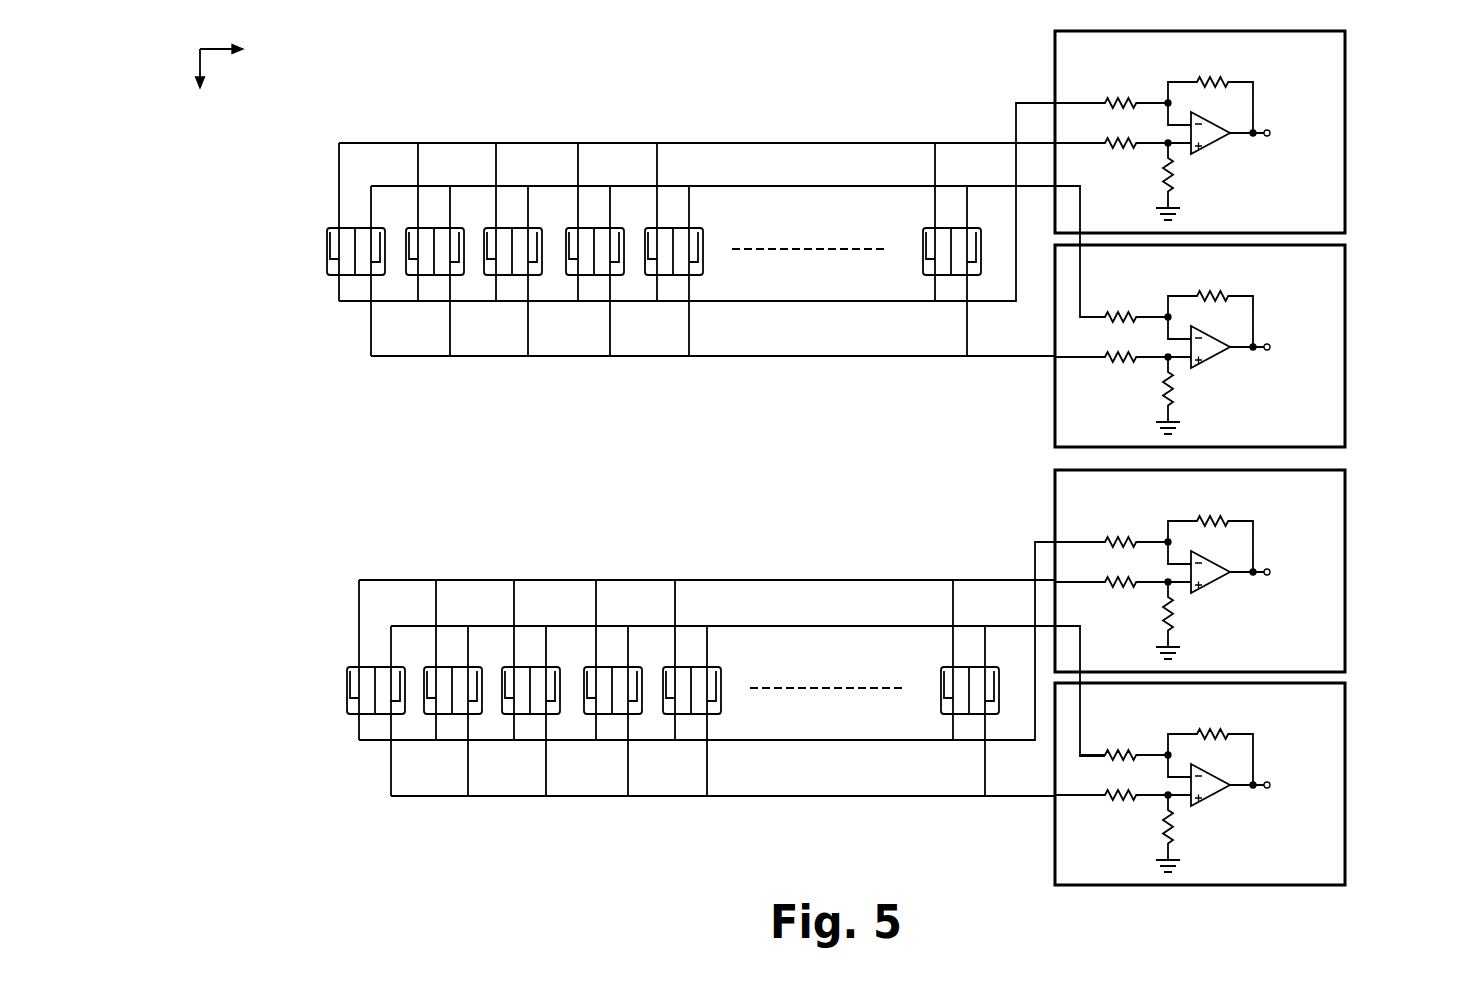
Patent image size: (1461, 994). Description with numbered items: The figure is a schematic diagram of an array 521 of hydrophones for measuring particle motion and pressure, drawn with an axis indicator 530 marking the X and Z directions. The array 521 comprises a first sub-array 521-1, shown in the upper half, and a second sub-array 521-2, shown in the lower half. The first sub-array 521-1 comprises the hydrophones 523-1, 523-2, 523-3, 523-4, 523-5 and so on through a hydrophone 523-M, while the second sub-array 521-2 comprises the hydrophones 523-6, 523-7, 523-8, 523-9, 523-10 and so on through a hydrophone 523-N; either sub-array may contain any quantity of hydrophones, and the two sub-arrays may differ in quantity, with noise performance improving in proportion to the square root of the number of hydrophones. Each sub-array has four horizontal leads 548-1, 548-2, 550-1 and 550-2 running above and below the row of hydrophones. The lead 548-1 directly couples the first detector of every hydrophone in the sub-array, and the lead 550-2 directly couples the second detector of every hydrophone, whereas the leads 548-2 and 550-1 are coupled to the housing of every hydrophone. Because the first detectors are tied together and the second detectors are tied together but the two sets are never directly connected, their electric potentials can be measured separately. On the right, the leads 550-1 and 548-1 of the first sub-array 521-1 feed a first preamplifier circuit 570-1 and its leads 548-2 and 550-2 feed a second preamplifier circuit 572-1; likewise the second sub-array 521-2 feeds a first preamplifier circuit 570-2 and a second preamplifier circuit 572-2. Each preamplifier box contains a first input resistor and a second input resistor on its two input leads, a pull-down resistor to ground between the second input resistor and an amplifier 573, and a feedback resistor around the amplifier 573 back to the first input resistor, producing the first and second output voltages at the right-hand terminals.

The coordinate axes 530 is at (200, 49).
The array 521 is at (558, 98).
The first sub-array 521-1 is at (410, 108).
The second sub-array 521-2 is at (410, 521).
The hydrophone 523-1 is at (333, 277).
The hydrophone 523-2 is at (412, 277).
The hydrophone 523-3 is at (490, 277).
The hydrophone 523-4 is at (572, 277).
The hydrophone 523-5 is at (651, 277).
The hydrophone 523-M is at (929, 277).
The hydrophone 523-6 is at (353, 716).
The hydrophone 523-7 is at (430, 716).
The hydrophone 523-8 is at (508, 716).
The hydrophone 523-9 is at (590, 716).
The hydrophone 523-10 is at (669, 716).
The hydrophone 523-N is at (947, 716).
The lead 548-1 is at (780, 142).
The lead 548-2 is at (874, 186).
The lead 550-1 is at (877, 301).
The lead 550-2 is at (782, 356).
The first preamplifier circuit 570-1 is at (1346, 146).
The second preamplifier circuit 572-1 is at (1255, 346).
The first preamplifier circuit 570-2 is at (1255, 571).
The second preamplifier circuit 572-2 is at (1255, 784).
The amplifier 573 is at (1219, 140).